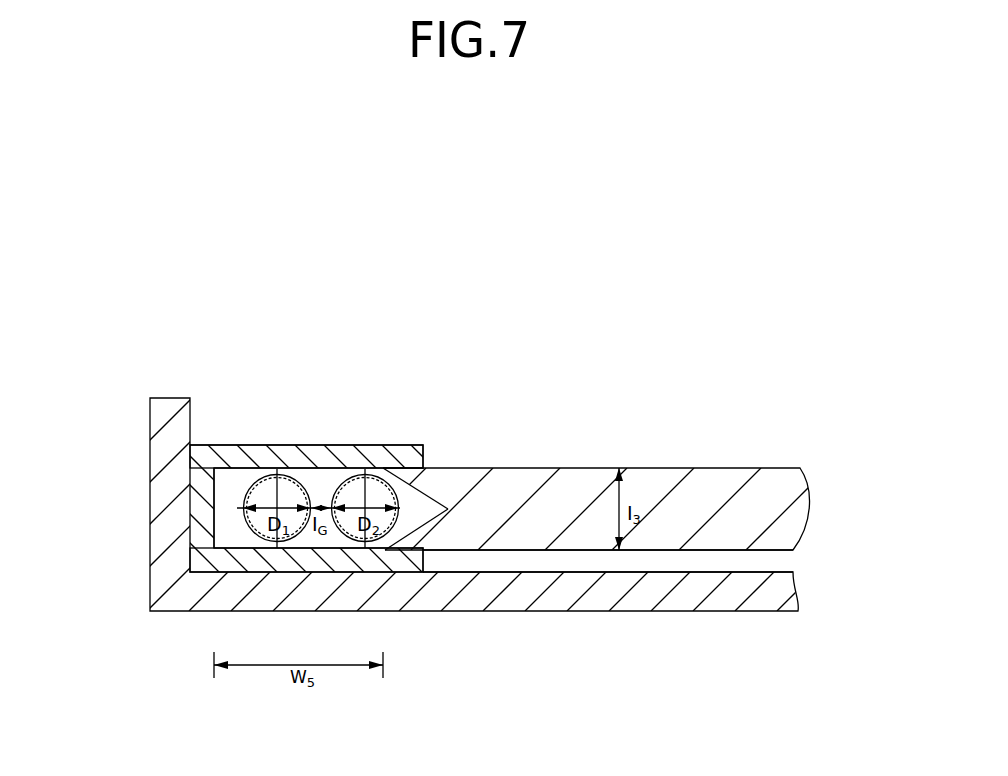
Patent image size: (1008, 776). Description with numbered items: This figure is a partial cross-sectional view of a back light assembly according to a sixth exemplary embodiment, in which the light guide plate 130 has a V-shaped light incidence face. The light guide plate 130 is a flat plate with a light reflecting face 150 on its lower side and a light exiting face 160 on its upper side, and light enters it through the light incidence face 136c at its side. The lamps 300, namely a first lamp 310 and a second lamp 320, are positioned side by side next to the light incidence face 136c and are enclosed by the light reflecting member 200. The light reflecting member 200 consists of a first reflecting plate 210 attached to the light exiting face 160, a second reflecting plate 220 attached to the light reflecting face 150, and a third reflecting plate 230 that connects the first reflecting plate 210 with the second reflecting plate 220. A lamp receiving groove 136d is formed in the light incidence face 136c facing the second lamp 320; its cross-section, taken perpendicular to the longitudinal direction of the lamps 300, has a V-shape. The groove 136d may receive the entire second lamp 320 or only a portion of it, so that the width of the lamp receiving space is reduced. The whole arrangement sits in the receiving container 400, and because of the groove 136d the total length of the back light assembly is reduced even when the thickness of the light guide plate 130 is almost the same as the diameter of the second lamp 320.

The light guide plate 130 is at (830, 522).
The light incidence face 136c is at (415, 530).
The lamp receiving groove 136d is at (427, 498).
The light reflecting face 150 is at (713, 552).
The light exiting face 160 is at (757, 468).
The light reflecting member 200 is at (72, 438).
The first reflecting plate 210 is at (237, 441).
The second reflecting plate 220 is at (207, 578).
The third reflecting plate 230 is at (207, 515).
The lamps 300 is at (321, 447).
The first lamp 310 is at (284, 487).
The second lamp 320 is at (356, 487).
The receiving container 400 is at (626, 596).